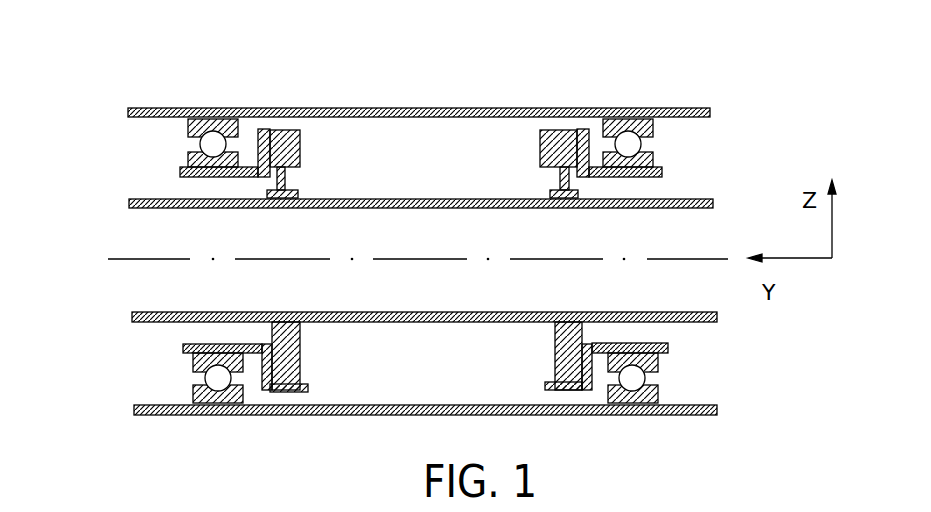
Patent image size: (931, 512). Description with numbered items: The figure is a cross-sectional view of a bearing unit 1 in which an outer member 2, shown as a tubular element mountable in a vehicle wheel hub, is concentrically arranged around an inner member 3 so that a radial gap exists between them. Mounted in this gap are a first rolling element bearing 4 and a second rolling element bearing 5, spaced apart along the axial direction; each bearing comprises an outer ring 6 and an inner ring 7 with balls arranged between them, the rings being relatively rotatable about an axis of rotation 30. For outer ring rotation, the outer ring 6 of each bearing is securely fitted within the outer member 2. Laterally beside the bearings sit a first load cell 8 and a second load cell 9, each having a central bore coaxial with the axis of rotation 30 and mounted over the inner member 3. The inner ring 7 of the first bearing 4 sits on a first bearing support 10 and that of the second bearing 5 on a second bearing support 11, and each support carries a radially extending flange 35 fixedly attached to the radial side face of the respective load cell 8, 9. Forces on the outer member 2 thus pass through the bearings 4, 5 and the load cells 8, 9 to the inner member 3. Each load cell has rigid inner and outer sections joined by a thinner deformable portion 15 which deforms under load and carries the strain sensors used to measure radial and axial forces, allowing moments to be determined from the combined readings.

The bearing unit 1 is at (612, 59).
The outer member 2 is at (668, 108).
The inner member 3 is at (698, 198).
The first rolling element bearing 4 is at (157, 116).
The second rolling element bearing 5 is at (678, 143).
The outer ring 6 is at (186, 128).
The inner ring 7 is at (188, 157).
The first load cell 8 is at (304, 148).
The second load cell 9 is at (542, 155).
The first bearing support 10 is at (188, 178).
The second bearing support 11 is at (653, 185).
The deformable portion 15 is at (290, 180).
The axis of rotation 30 is at (150, 259).
The radially extending flange 35 is at (256, 150).